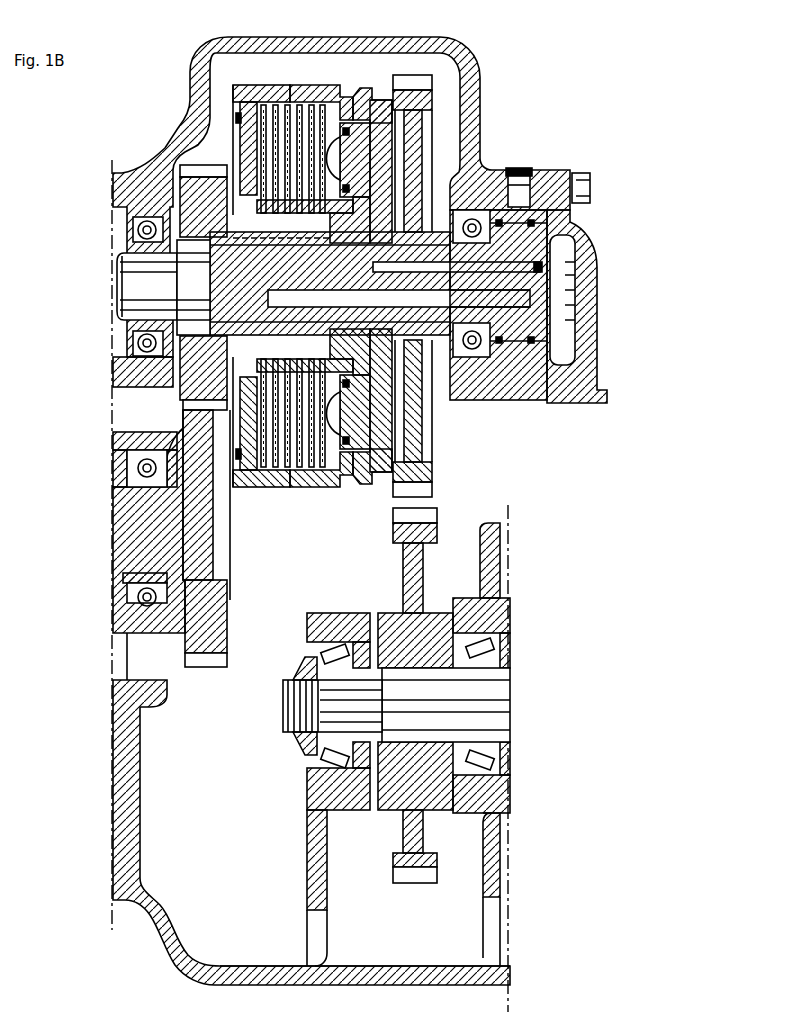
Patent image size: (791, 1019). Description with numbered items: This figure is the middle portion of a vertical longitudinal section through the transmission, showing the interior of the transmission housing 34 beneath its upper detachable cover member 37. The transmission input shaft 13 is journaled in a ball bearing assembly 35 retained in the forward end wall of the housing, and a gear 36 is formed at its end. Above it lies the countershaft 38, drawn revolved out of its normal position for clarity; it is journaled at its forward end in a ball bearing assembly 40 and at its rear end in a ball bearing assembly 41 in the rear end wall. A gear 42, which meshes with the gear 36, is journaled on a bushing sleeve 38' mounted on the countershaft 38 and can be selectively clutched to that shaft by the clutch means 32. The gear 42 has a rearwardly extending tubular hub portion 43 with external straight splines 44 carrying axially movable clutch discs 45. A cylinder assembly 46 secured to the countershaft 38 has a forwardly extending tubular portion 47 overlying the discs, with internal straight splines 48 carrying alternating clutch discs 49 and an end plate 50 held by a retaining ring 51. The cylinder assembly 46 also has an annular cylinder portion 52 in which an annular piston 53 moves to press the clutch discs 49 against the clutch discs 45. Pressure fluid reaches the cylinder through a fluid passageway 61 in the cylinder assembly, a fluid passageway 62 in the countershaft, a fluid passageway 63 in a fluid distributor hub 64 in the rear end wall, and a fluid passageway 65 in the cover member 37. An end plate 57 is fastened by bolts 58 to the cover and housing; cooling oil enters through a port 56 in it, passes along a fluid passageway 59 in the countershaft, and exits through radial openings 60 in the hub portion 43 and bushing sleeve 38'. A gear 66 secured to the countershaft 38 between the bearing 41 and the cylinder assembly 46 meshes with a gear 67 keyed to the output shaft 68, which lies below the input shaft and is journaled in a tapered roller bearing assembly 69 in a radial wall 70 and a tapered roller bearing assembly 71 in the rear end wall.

The transmission input shaft 13 is at (120, 538).
The clutch means 32 is at (321, 61).
The transmission housing 34 is at (316, 980).
The ball bearing assembly 35 is at (140, 469).
The gear 36 is at (215, 668).
The cover member 37 is at (462, 57).
The countershaft 38 is at (181, 286).
The bushing sleeve 38' is at (218, 287).
The ball bearing assembly 40 is at (131, 231).
The ball bearing assembly 41 is at (472, 200).
The gear 42 is at (192, 165).
The tubular hub portion 43 is at (288, 245).
The external straight splines 44 is at (330, 218).
The clutch discs 45 is at (286, 488).
The cylinder assembly 46 is at (352, 105).
The tubular portion 47 is at (252, 90).
The internal straight splines 48 is at (330, 95).
The clutch discs 49 is at (305, 100).
The end plate 50 is at (242, 98).
The retaining ring 51 is at (240, 120).
The cylinder portion 52 is at (368, 177).
The piston 53 is at (352, 148).
The port 56 is at (596, 285).
The end plate 57 is at (592, 258).
The bolts 58 is at (588, 180).
The fluid passageway 59 is at (536, 302).
The radial openings 60 is at (262, 345).
The fluid passageway 61 is at (352, 257).
The fluid passageway 62 is at (342, 285).
The fluid passageway 63 is at (548, 232).
The fluid distributor hub 64 is at (557, 221).
The fluid passageway 65 is at (522, 170).
The gear 66 is at (420, 88).
The gear 67 is at (397, 517).
The output shaft 68 is at (283, 708).
The tapered roller bearing assembly 69 is at (316, 652).
The radial wall 70 is at (312, 822).
The tapered roller bearing assembly 71 is at (482, 650).